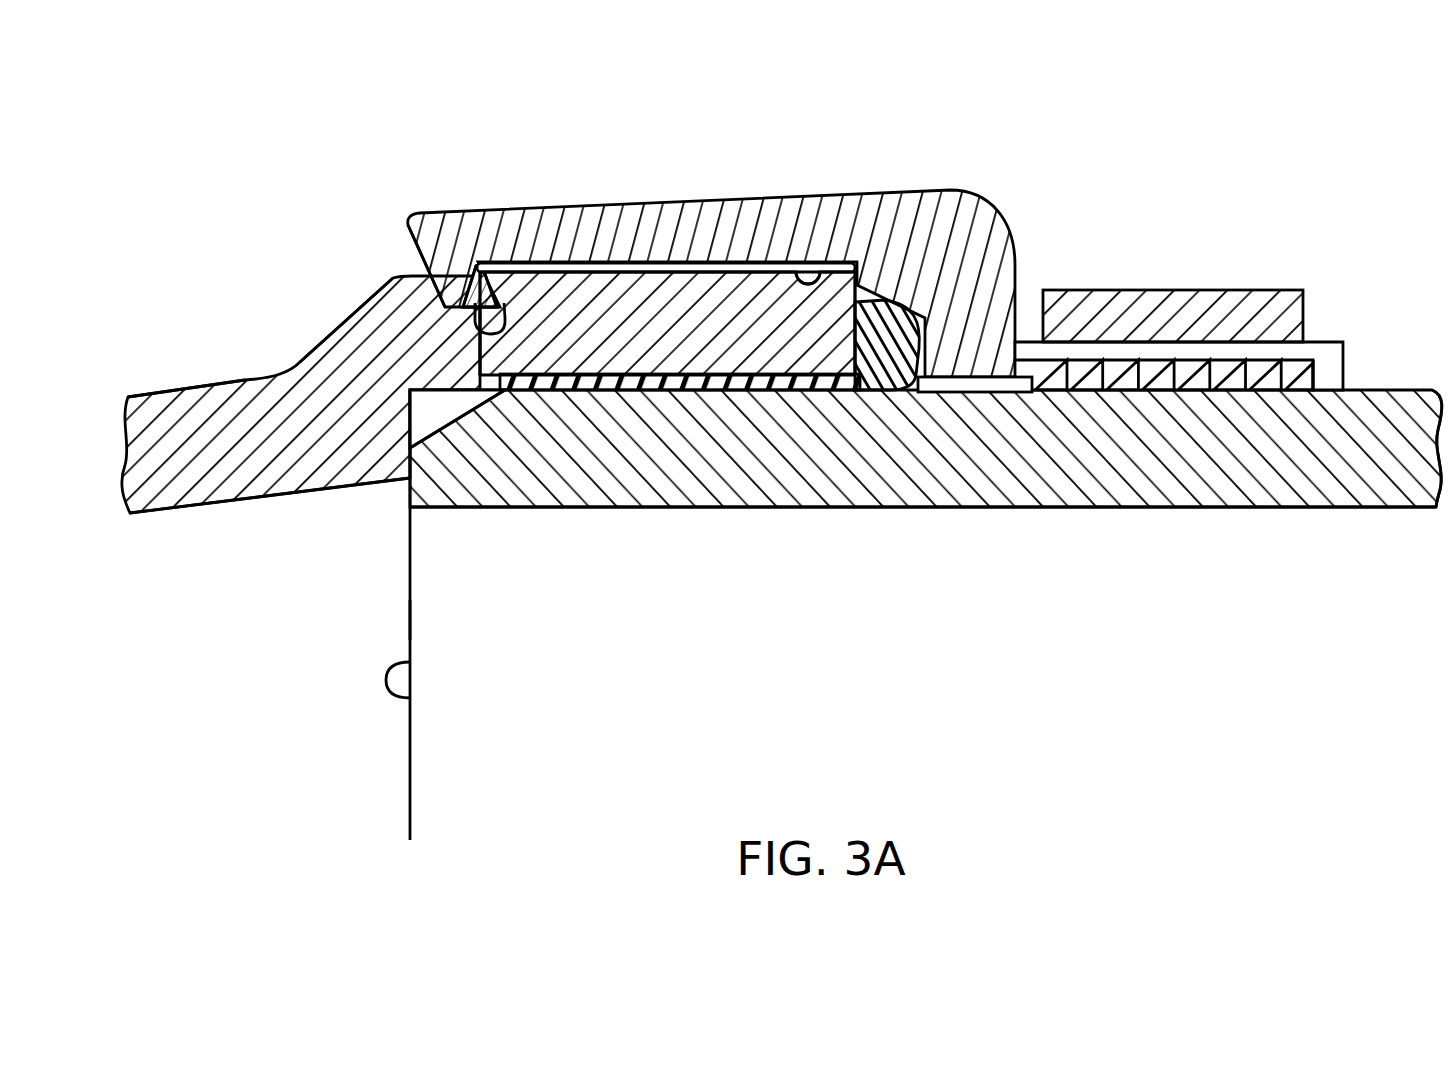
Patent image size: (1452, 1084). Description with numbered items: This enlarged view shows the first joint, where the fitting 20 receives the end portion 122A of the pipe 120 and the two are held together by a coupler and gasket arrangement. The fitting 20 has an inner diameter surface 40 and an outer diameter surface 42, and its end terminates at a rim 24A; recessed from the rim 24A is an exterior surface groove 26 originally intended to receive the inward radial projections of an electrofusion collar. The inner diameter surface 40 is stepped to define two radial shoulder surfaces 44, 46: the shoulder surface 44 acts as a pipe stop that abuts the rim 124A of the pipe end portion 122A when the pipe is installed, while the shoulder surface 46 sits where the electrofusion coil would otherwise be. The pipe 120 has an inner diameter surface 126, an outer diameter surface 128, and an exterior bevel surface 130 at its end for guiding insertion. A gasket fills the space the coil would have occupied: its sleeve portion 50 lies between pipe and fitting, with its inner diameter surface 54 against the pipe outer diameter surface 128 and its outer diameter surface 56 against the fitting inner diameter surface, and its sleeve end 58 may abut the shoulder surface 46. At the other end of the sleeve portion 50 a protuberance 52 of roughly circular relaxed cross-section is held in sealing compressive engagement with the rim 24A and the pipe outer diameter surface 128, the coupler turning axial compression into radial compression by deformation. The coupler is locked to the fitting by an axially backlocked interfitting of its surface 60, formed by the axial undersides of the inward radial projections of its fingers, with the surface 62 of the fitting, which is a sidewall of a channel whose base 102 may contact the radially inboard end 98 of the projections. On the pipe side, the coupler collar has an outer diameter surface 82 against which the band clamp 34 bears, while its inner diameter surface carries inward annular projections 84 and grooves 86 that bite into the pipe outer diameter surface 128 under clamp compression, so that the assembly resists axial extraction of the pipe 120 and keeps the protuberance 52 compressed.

The fitting 20 is at (172, 278).
The rim 24A is at (858, 283).
The exterior surface groove 26 is at (803, 256).
The band clamp 34 is at (1232, 258).
The inner diameter surface 40 is at (202, 512).
The outer diameter surface 42 is at (190, 395).
The radial shoulder surface 44 is at (412, 588).
The radial shoulder surface 46 is at (562, 352).
The sleeve portion 50 is at (653, 383).
The protuberance 52 is at (897, 350).
The inner diameter surface 54 is at (755, 386).
The outer diameter surface 56 is at (751, 385).
The sleeve end 58 is at (482, 395).
The coupler surface 60 is at (478, 305).
The fitting surface 62 is at (478, 300).
The outer diameter surface 82 is at (1313, 345).
The inward annular projections 84 is at (1300, 378).
The grooves 86 is at (1224, 398).
The radially inboard end 98 is at (532, 268).
The channel base 102 is at (420, 278).
The pipe 120 is at (1043, 480).
The pipe end portion 122A is at (396, 620).
The pipe rim 124A is at (412, 690).
The inner diameter surface 126 is at (1257, 507).
The outer diameter surface 128 is at (1395, 390).
The exterior bevel surface 130 is at (452, 416).